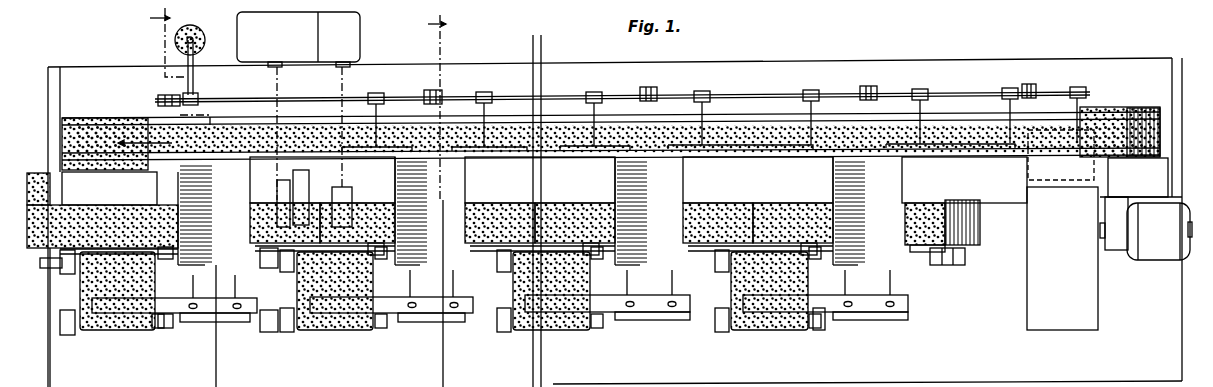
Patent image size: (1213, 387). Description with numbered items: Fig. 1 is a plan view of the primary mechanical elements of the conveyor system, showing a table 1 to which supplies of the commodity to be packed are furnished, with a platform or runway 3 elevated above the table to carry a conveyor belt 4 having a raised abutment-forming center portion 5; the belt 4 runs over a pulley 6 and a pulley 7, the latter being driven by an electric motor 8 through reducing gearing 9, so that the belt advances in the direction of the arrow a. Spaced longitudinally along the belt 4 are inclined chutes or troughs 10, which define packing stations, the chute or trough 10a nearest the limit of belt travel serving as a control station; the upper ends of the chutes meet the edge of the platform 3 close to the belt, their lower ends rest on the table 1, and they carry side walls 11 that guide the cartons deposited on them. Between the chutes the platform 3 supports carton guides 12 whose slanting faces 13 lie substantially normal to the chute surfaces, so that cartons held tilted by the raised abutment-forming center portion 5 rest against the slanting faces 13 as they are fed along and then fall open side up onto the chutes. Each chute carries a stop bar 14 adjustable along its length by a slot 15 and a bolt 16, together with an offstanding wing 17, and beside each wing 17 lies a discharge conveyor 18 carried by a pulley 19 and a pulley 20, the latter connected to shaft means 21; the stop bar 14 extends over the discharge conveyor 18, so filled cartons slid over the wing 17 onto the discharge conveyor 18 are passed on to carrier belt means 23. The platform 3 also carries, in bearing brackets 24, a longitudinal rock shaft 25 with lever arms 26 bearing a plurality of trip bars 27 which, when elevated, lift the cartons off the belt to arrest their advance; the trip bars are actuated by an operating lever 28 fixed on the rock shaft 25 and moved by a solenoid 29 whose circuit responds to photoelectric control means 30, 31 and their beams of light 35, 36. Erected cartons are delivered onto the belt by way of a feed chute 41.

The table 1 is at (615, 211).
The platform or runway 3 is at (136, 55).
The conveyor belt 4 is at (463, 118).
The raised abutment-forming center portion 5 is at (402, 131).
The pulley 6 is at (88, 172).
The pulley 7 is at (1135, 165).
The electric motor 8 is at (1152, 260).
The reducing gearing 9 is at (1112, 250).
The chute or trough 10 is at (465, 184).
The chute or trough 10a is at (178, 188).
The side walls 11 is at (250, 232).
The carton guides 12 is at (365, 205).
The slanting faces 13 is at (162, 200).
The stop bar 14 is at (206, 322).
The slot 15 is at (200, 275).
The bolt 16 is at (196, 304).
The offstanding wing 17 is at (158, 288).
The discharge conveyor 18 is at (84, 297).
The pulley 19 is at (78, 334).
The pulley 20 is at (82, 274).
The shaft means 21 is at (54, 272).
The carrier belt means 23 is at (33, 256).
The bearing brackets 24 is at (158, 97).
The rock shaft 25 is at (752, 92).
The lever arms 26 is at (372, 112).
The trip bars 27 is at (410, 147).
The operating lever 28 is at (195, 79).
The solenoid 29 is at (192, 25).
The photoelectric control means 30 is at (292, 190).
The photoelectric control means 31 is at (238, 25).
The beam of light 35 is at (277, 82).
The beam of light 36 is at (344, 84).
The feed chute 41 is at (1035, 293).
The arrow a is at (144, 141).